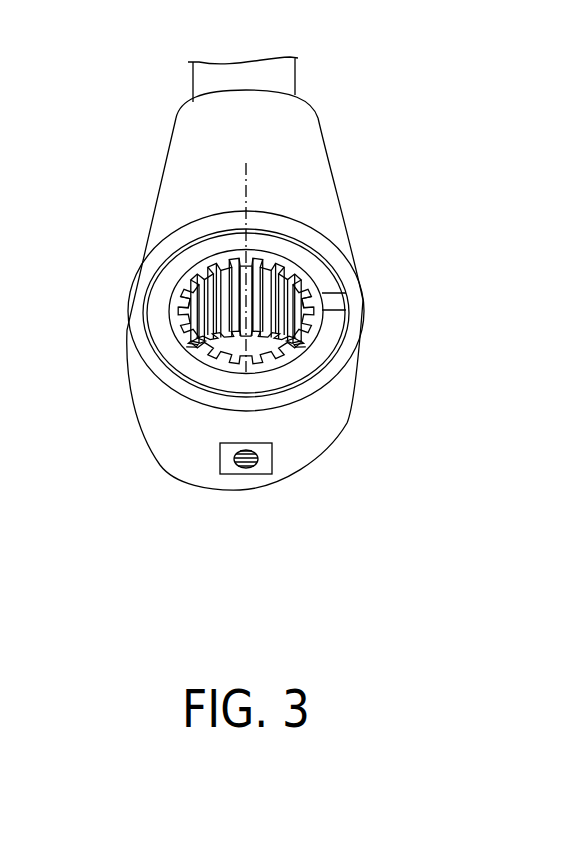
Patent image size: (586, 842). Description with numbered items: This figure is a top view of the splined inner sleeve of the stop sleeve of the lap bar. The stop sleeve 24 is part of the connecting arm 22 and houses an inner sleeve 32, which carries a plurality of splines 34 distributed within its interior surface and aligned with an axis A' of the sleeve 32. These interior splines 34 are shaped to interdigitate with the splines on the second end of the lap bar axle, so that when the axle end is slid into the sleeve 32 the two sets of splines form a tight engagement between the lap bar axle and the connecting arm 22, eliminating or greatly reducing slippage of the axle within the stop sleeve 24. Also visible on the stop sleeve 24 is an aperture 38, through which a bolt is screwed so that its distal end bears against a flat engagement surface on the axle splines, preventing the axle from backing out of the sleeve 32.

The connecting arm 22 is at (203, 82).
The stop sleeve 24 is at (368, 382).
The inner sleeve 32 is at (316, 279).
The splines 34 is at (208, 368).
The aperture 38 is at (245, 468).
The axis of the sleeve A' is at (319, 211).